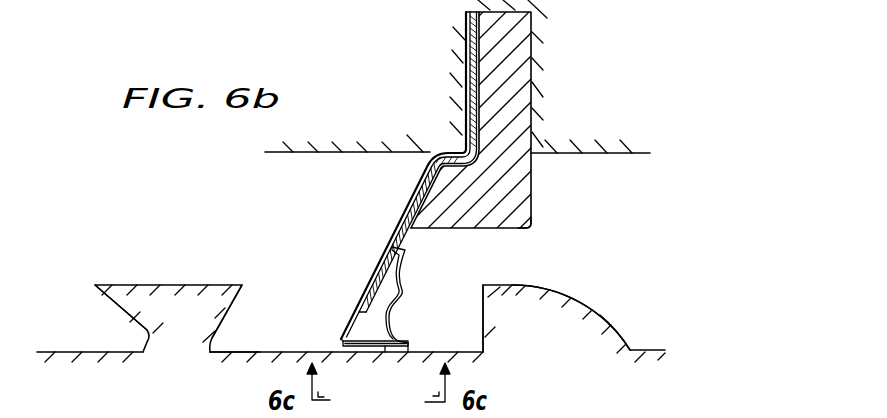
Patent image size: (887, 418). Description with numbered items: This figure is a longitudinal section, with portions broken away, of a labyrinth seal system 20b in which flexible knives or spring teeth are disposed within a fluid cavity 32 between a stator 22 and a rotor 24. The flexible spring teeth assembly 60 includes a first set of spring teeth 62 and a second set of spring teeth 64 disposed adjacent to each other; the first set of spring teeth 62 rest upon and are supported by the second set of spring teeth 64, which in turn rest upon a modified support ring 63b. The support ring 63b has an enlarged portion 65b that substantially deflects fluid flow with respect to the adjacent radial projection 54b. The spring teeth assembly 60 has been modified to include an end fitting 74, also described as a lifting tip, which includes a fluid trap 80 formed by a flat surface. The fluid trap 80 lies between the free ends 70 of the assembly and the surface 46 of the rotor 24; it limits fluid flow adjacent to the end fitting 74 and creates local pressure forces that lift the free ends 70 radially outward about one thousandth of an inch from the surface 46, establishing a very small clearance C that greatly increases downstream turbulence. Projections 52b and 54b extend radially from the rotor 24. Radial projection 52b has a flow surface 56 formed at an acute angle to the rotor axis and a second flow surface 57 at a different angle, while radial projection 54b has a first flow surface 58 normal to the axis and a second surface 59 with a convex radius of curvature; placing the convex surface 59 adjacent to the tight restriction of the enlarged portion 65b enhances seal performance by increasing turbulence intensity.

The labyrinth seal system 20b is at (164, 280).
The stator 22 is at (608, 103).
The rotor 24 is at (351, 311).
The fluid cavity 32 is at (270, 231).
The surface of rotor 46 is at (257, 352).
The radial projection 52b is at (176, 289).
The radial projection 54b is at (578, 304).
The flow surface 56 is at (120, 309).
The second flow surface 57 is at (228, 312).
The first flow surface 58 is at (481, 300).
The second surface 59 is at (612, 327).
The spring teeth assembly 60 is at (382, 208).
The first set of spring teeth 62 is at (400, 216).
The support ring 63b is at (531, 178).
The second set of spring teeth 64 is at (404, 240).
The enlarged portion 65b is at (531, 228).
The free ends 70 is at (337, 338).
The end fitting 74 is at (392, 303).
The fluid trap 80 is at (386, 353).
The clearance C is at (415, 346).